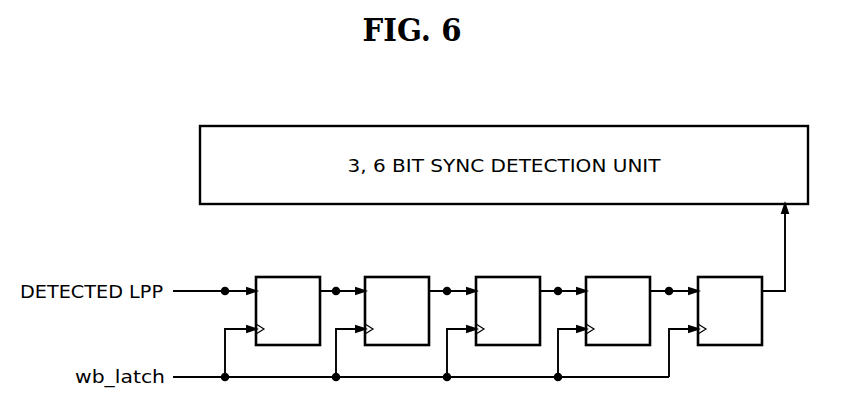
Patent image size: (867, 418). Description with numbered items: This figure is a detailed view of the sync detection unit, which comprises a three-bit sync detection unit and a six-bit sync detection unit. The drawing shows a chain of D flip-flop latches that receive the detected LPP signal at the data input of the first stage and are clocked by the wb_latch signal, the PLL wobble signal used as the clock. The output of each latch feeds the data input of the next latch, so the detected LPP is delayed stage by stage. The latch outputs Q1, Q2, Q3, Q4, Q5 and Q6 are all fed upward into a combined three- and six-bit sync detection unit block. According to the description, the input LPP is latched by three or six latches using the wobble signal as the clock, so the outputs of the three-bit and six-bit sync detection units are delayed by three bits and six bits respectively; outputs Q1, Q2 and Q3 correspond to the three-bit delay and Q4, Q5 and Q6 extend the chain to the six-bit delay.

The first flip-flop output Q1 is at (225, 204).
The second flip-flop output Q2 is at (336, 204).
The third flip-flop output Q3 is at (447, 204).
The fourth flip-flop output Q4 is at (558, 204).
The fifth flip-flop output Q5 is at (669, 204).
The sixth flip-flop output Q6 is at (770, 247).